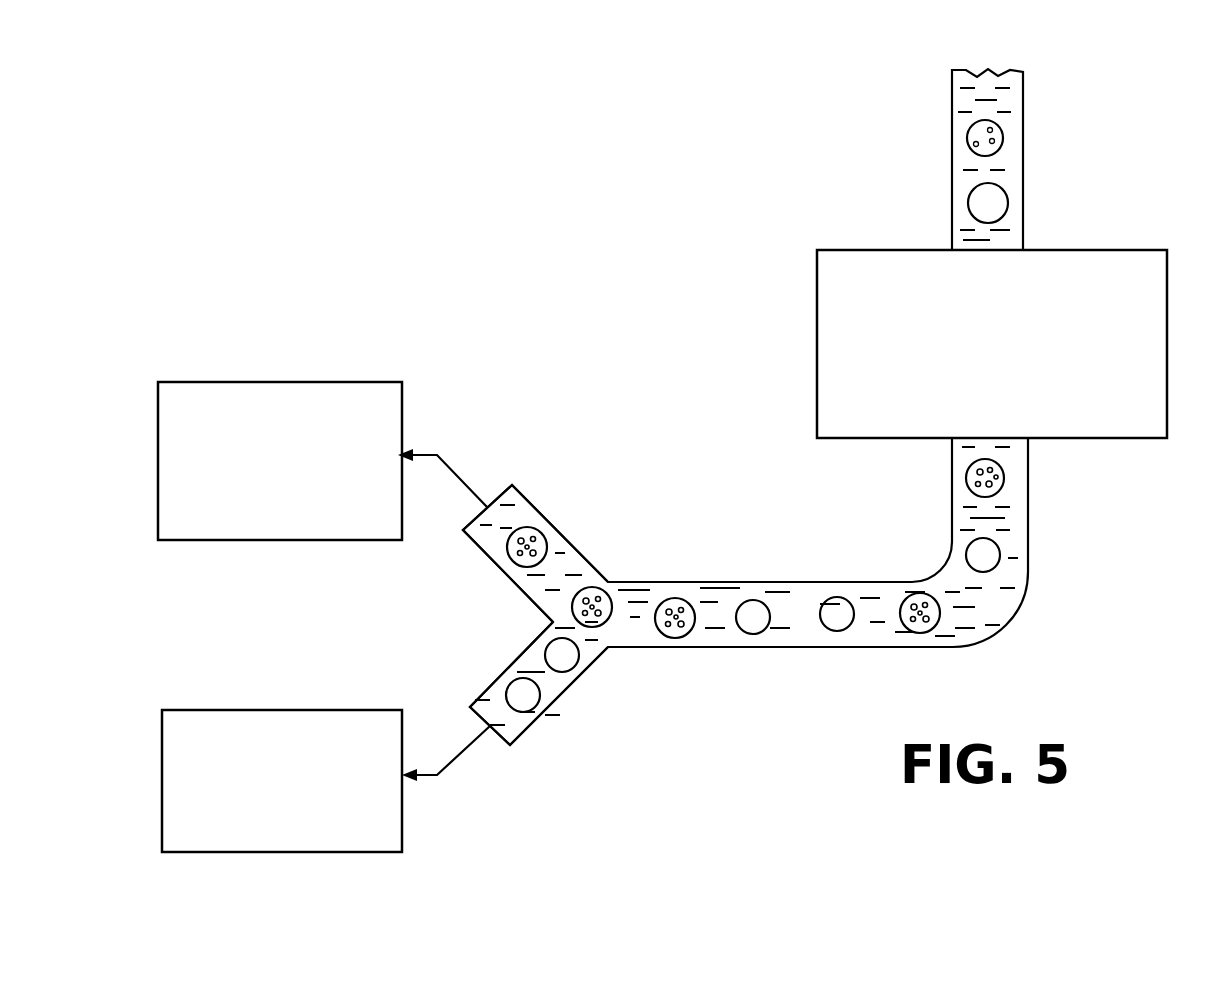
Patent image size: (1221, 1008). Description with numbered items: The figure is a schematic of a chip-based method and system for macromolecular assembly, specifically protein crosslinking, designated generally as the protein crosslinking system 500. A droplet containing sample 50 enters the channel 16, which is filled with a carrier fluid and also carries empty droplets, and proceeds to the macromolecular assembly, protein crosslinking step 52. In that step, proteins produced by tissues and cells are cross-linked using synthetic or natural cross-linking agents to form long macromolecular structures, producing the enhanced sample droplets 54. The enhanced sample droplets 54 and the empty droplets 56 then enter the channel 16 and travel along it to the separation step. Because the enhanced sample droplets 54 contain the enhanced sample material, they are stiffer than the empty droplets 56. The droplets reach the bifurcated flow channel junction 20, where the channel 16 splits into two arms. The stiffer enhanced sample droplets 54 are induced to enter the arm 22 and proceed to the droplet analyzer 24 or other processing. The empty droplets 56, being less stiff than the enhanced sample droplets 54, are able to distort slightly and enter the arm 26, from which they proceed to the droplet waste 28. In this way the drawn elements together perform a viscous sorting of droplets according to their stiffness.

The protein crosslinking system 500 is at (638, 193).
The channel 16 is at (1023, 177).
The bifurcated flow channel junction 20 is at (760, 542).
The arm 22 is at (537, 507).
The arm 26 is at (560, 693).
The droplet analyzer 24 is at (302, 382).
The droplet waste 28 is at (298, 710).
The droplet containing sample 50 is at (967, 140).
The macromolecular assembly, protein crosslinking step 52 is at (1110, 250).
The enhanced sample droplets 54 is at (1003, 485).
The empty droplets 56 is at (837, 598).